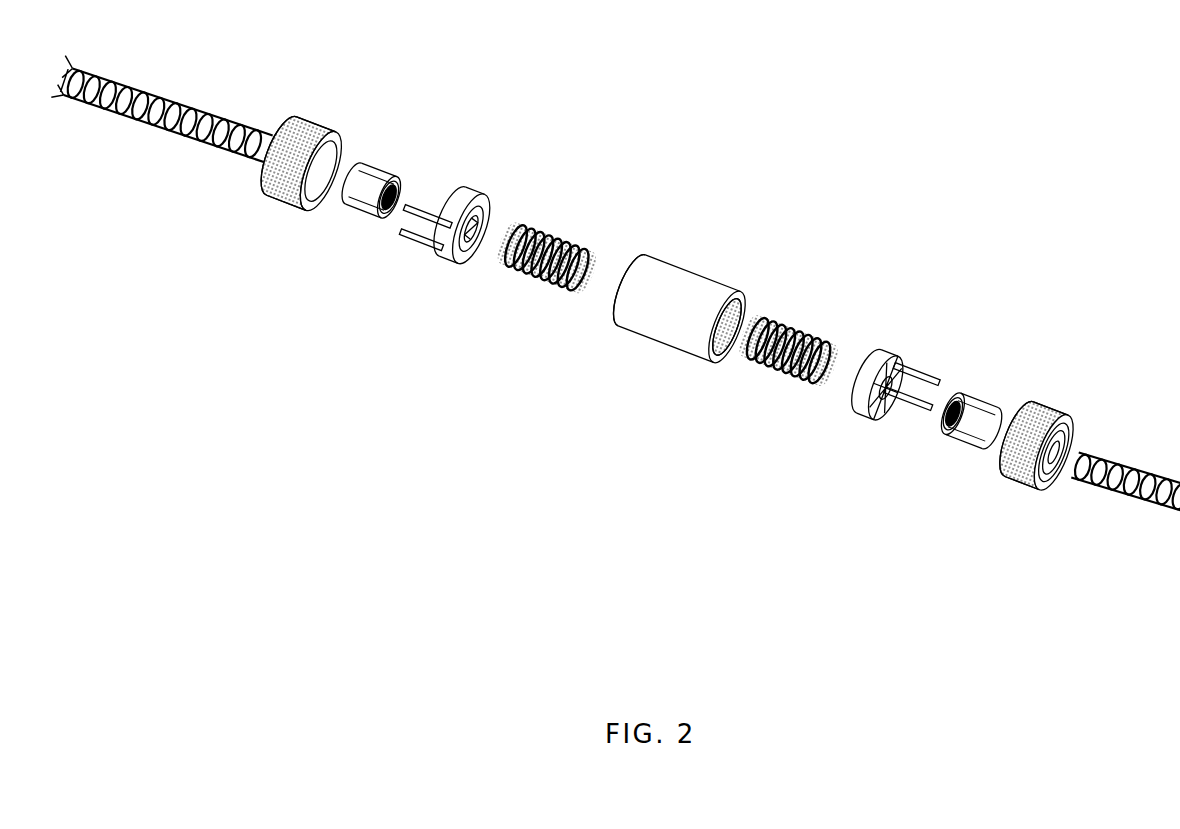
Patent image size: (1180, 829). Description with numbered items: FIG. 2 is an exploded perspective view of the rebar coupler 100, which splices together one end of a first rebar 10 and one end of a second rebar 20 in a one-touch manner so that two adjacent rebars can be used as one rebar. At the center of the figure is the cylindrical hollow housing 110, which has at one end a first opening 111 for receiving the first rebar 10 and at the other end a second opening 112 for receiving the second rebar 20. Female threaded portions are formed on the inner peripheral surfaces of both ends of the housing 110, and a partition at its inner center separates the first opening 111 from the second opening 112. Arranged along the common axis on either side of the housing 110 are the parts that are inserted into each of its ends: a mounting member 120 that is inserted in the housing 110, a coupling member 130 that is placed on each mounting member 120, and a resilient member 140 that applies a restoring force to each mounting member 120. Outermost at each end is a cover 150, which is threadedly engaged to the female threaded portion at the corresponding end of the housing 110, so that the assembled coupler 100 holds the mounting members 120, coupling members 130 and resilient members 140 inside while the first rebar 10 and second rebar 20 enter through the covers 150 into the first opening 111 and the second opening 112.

The rebar coupler 100 is at (596, 45).
The first rebar 10 is at (180, 100).
The second rebar 20 is at (1117, 460).
The housing 110 is at (675, 284).
The first opening 111 is at (601, 306).
The second opening 112 is at (720, 348).
The mounting member 120 is at (472, 186).
The coupling member 130 is at (386, 156).
The resilient member 140 is at (558, 228).
The cover 150 is at (336, 125).